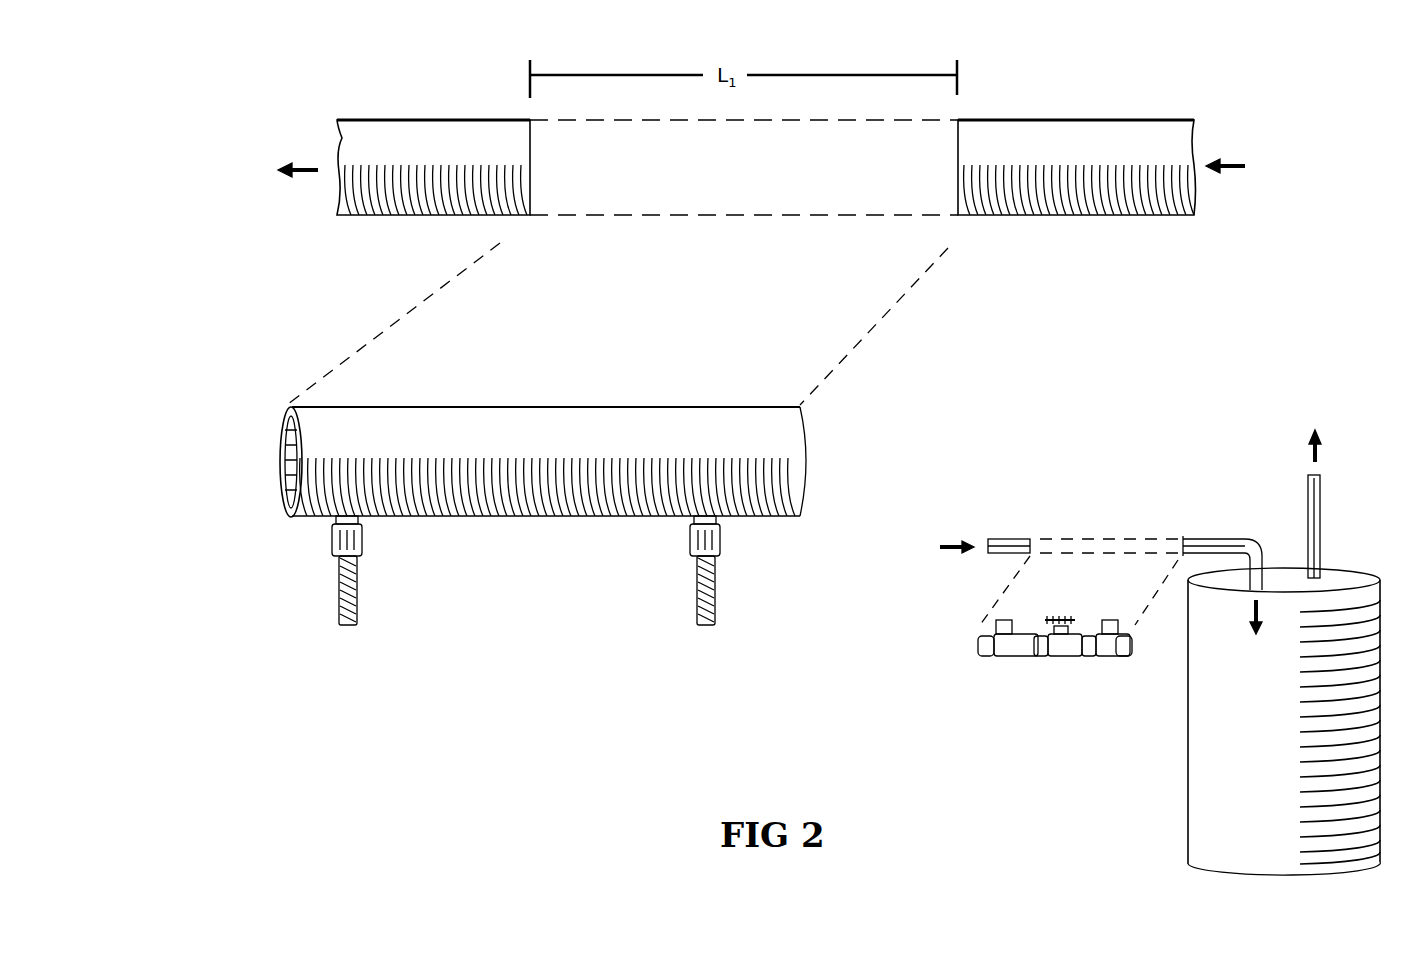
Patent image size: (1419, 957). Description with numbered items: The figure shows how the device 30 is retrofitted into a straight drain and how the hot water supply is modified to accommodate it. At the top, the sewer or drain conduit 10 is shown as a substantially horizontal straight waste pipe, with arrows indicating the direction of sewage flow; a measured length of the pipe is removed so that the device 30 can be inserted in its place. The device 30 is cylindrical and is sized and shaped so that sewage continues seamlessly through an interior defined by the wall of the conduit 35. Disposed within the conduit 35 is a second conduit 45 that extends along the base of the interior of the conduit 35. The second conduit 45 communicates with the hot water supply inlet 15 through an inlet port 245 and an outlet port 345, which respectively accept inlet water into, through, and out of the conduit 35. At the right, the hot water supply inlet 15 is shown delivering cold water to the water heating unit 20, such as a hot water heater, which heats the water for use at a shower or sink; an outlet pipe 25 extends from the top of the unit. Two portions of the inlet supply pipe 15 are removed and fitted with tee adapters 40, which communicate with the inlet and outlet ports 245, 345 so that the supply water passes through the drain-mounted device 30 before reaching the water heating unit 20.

The sewer 10 is at (1148, 120).
The hot water supply inlet 15 is at (1228, 540).
The water heating unit 20 is at (1284, 721).
The outlet pipe 25 is at (1322, 500).
The device 30 is at (262, 517).
The conduit 35 is at (532, 520).
The tee adapters 40 is at (1047, 665).
The second conduit 45 is at (695, 590).
The inlet port 245 is at (332, 526).
The outlet port 345 is at (722, 530).